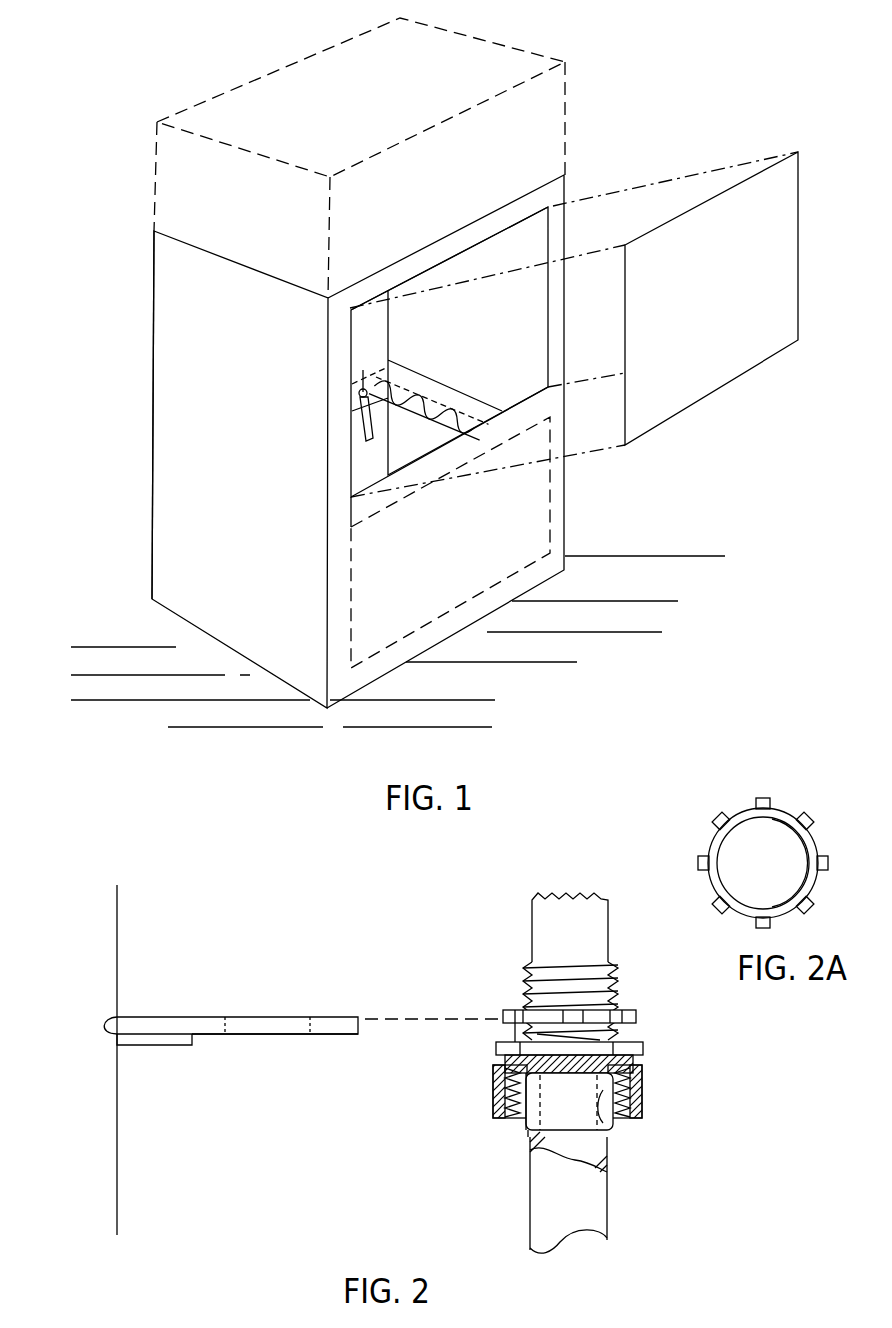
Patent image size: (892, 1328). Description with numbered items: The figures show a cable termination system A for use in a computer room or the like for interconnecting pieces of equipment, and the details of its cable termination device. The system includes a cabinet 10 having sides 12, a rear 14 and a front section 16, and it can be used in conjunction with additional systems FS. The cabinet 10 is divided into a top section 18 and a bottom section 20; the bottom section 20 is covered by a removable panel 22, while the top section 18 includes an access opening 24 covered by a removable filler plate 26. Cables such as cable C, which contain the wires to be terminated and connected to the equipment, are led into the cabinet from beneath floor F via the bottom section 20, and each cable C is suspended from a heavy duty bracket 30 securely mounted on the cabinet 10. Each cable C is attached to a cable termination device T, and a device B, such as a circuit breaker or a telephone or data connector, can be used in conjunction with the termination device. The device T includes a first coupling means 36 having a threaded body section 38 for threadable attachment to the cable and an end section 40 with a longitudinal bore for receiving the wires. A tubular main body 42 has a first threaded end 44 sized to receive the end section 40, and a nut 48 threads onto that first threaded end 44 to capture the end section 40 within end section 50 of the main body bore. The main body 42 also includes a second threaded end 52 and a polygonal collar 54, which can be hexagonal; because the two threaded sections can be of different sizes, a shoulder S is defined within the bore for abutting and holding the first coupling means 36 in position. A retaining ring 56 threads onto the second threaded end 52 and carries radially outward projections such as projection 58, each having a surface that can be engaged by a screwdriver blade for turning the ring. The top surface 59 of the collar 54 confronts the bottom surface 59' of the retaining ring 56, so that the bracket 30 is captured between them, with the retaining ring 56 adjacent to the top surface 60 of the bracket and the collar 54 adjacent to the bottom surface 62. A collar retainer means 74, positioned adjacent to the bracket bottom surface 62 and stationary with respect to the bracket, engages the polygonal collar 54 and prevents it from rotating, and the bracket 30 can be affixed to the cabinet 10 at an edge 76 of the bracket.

In FIG. 1, the cable termination system A is at (79, 280).
In FIG. 1, the cabinet 10 is at (150, 522).
In FIG. 2, the cabinet 10 is at (115, 1113).
In FIG. 1, the sides 12 is at (226, 448).
In FIG. 1, the rear 14 is at (152, 417).
In FIG. 1, the additional systems FS is at (558, 103).
In FIG. 1, the front section 16 is at (352, 526).
In FIG. 1, the top section 18 is at (528, 302).
In FIG. 1, the bottom section 20 is at (564, 502).
In FIG. 1, the removable panel 22 is at (432, 590).
In FIG. 1, the access opening 24 is at (482, 246).
In FIG. 1, the removable filler plate 26 is at (717, 375).
In FIG. 1, the heavy duty bracket 30 is at (432, 395).
In FIG. 2, the heavy duty bracket 30 is at (177, 1003).
In FIG. 1, the cable C is at (387, 405).
In FIG. 2, the cable C is at (602, 1218).
In FIG. 1, the floor F is at (107, 668).
In FIG. 2, the top surface of the bracket 60 is at (204, 1017).
In FIG. 2, the bottom surface of the bracket 62 is at (208, 1037).
In FIG. 2, the collar retainer means 74 is at (158, 1047).
In FIG. 2, the edge of the bracket 76 is at (108, 1018).
In FIG. 2, the cable termination device T is at (432, 1082).
In FIG. 2, the device B is at (530, 907).
In FIG. 2, the second threaded end 52 is at (522, 985).
In FIG. 2, the retaining ring 56 is at (637, 1018).
In FIG. 2A, the retaining ring 56 is at (797, 803).
In FIG. 2, the projection 58 is at (575, 1015).
In FIG. 2A, the projection 58 is at (813, 823).
In FIG. 2, the bottom surface of the retaining ring 59' is at (568, 991).
In FIG. 2, the tubular main body 42 is at (508, 1030).
In FIG. 2, the top surface of the polygonal collar 59 is at (602, 1039).
In FIG. 2, the polygonal collar 54 is at (640, 1052).
In FIG. 2, the shoulder S is at (507, 1072).
In FIG. 2, the first threaded end 44 is at (510, 1083).
In FIG. 2, the nut 48 is at (637, 1090).
In FIG. 2, the end section 40 is at (583, 1115).
In FIG. 2, the first coupling means 36 is at (537, 1115).
In FIG. 2, the threaded body section 38 is at (528, 1137).
In FIG. 2, the end section of the main body bore 50 is at (605, 1125).